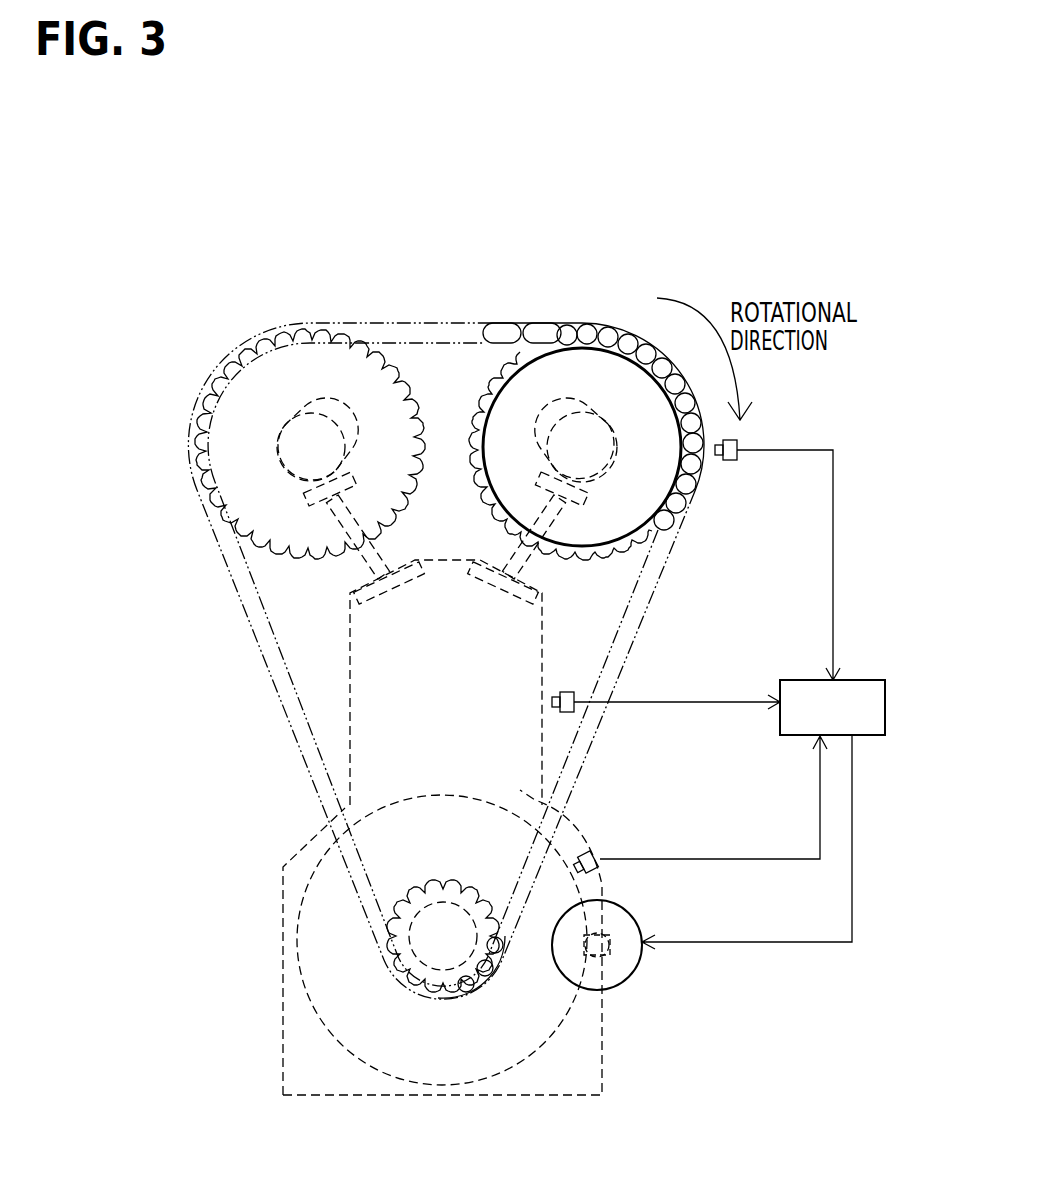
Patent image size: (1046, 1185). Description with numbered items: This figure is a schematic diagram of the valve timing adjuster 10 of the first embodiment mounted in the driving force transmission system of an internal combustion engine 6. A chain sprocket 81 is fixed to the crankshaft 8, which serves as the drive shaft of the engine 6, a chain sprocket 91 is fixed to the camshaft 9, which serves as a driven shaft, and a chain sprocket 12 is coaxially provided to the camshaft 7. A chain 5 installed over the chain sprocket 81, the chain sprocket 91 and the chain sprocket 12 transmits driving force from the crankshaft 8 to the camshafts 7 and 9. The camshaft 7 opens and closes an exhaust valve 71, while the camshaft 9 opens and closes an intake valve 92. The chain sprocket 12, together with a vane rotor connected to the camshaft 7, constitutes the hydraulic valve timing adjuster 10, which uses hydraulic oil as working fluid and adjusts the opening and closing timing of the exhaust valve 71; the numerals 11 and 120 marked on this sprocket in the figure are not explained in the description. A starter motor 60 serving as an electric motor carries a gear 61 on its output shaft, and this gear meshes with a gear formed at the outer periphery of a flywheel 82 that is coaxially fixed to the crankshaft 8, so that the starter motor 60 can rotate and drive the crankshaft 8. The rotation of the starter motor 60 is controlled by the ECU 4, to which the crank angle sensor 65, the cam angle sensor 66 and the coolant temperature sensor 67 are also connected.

The ECU 4 is at (797, 740).
The chain 5 is at (700, 480).
The internal combustion engine 6 is at (283, 1058).
The camshaft 7 is at (582, 412).
The crankshaft 8 is at (385, 944).
The camshaft 9 is at (311, 413).
The valve timing adjuster 10 is at (618, 590).
The sprocket teeth 11 is at (487, 400).
The chain sprocket 12 is at (545, 350).
The chain links 120 is at (512, 372).
The starter motor 60 is at (634, 975).
The gear 61 is at (620, 933).
The crank angle sensor 65 is at (600, 852).
The cam angle sensor 66 is at (740, 445).
The coolant temperature sensor 67 is at (575, 710).
The exhaust valve 71 is at (505, 606).
The chain sprocket 81 is at (417, 888).
The flywheel 82 is at (565, 1027).
The chain sprocket 91 is at (200, 404).
The intake valve 92 is at (392, 606).